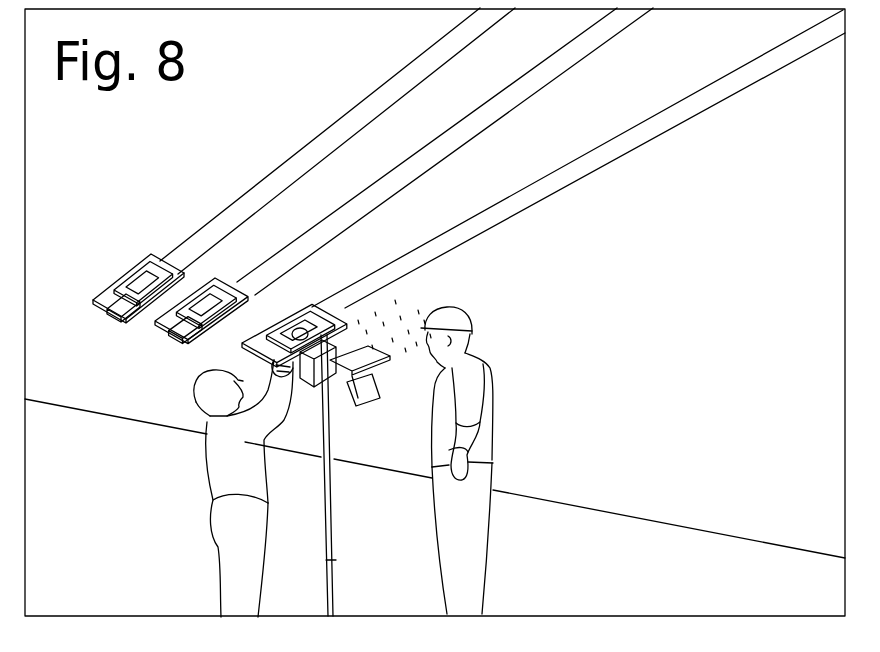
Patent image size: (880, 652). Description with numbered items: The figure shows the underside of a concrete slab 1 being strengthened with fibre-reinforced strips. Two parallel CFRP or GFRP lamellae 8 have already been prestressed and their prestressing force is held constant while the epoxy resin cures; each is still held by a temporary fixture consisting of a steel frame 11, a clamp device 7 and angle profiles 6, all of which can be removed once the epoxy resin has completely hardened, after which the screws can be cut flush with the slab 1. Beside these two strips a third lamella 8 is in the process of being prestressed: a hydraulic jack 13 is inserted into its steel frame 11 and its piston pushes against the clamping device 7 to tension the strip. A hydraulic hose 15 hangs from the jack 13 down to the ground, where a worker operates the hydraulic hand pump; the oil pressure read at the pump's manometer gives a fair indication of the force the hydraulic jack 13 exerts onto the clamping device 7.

The concrete slab 1 is at (695, 326).
The angle profiles 6 is at (99, 285).
The clamp device 7 is at (168, 332).
The CFRP or GFRP lamellae 8 is at (483, 227).
The steel frame 11 is at (334, 302).
The hydraulic jack 13 is at (313, 343).
The hydraulic hose 15 is at (334, 563).